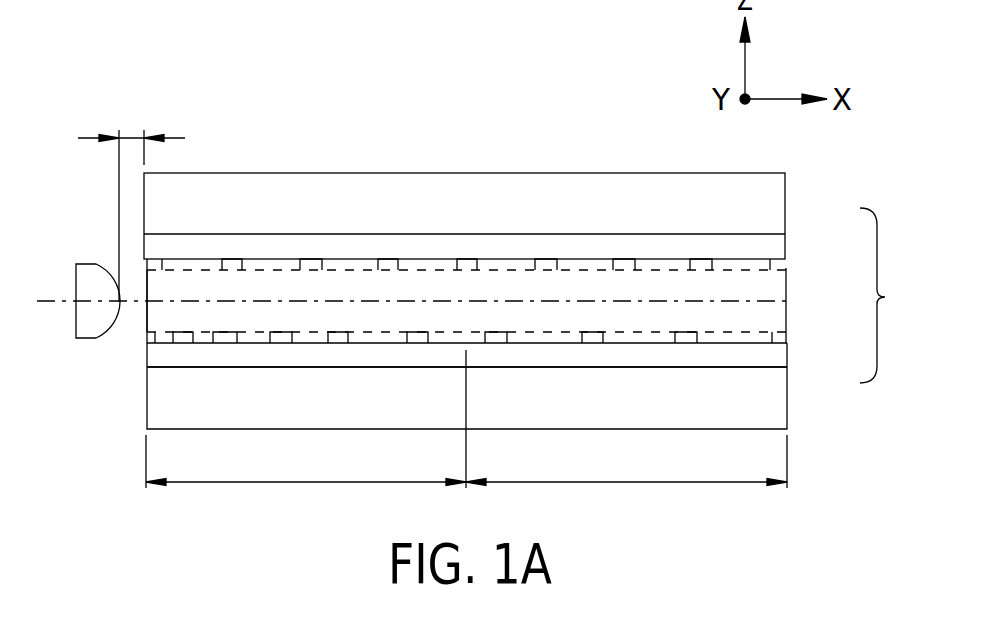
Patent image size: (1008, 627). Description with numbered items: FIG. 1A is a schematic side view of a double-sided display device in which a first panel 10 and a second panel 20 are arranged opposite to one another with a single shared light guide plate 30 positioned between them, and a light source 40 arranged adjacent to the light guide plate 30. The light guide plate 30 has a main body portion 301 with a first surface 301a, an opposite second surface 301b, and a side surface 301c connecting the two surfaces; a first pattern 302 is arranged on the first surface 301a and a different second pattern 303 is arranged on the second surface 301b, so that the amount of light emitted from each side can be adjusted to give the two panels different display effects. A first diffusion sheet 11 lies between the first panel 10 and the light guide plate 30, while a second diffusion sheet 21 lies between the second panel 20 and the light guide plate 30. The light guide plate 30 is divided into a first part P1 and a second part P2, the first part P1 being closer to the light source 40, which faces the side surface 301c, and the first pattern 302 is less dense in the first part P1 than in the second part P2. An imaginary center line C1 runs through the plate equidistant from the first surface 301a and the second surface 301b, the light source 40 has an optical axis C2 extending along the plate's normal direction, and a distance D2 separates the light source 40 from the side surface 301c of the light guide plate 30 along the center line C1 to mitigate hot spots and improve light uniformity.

The first panel 10 is at (160, 405).
The first diffusion sheet 11 is at (157, 357).
The second panel 20 is at (763, 182).
The second diffusion sheet 21 is at (733, 240).
The light guide plate 30 is at (892, 295).
The main body portion 301 is at (780, 292).
The first surface 301a is at (778, 337).
The second surface 301b is at (778, 268).
The side surface 301c is at (146, 272).
The first pattern 302 is at (743, 337).
The second pattern 303 is at (747, 263).
The light source 40 is at (92, 274).
The center line C1 is at (398, 337).
The optical axis C2 is at (38, 302).
The distance D2 is at (131, 129).
The first part P1 is at (306, 419).
The second part P2 is at (626, 461).